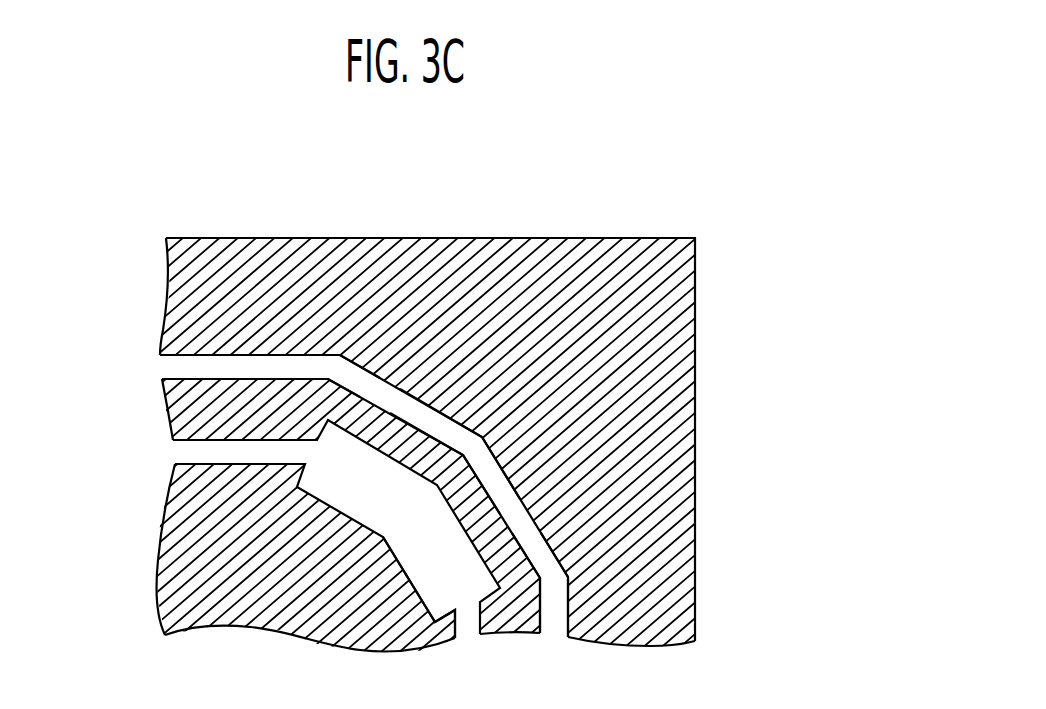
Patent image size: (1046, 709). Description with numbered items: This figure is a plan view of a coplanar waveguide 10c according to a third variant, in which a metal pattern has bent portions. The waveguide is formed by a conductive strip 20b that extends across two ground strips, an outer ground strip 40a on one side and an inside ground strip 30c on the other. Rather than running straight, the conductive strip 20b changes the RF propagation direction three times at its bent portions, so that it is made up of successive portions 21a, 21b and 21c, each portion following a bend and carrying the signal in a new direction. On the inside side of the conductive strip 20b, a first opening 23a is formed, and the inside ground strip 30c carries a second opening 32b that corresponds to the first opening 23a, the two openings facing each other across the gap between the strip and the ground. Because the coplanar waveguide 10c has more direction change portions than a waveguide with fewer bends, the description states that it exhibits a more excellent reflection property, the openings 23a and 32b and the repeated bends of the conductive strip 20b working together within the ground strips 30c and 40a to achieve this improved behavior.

The coplanar waveguide 10c is at (183, 151).
The ground strip 40a is at (180, 273).
The conductive strip 20b is at (182, 371).
The portion 21a is at (327, 400).
The portion 21b is at (470, 437).
The portion 21c is at (515, 598).
The first opening 23a is at (450, 535).
The inside ground strip 30c is at (175, 530).
The second opening 32b is at (420, 570).